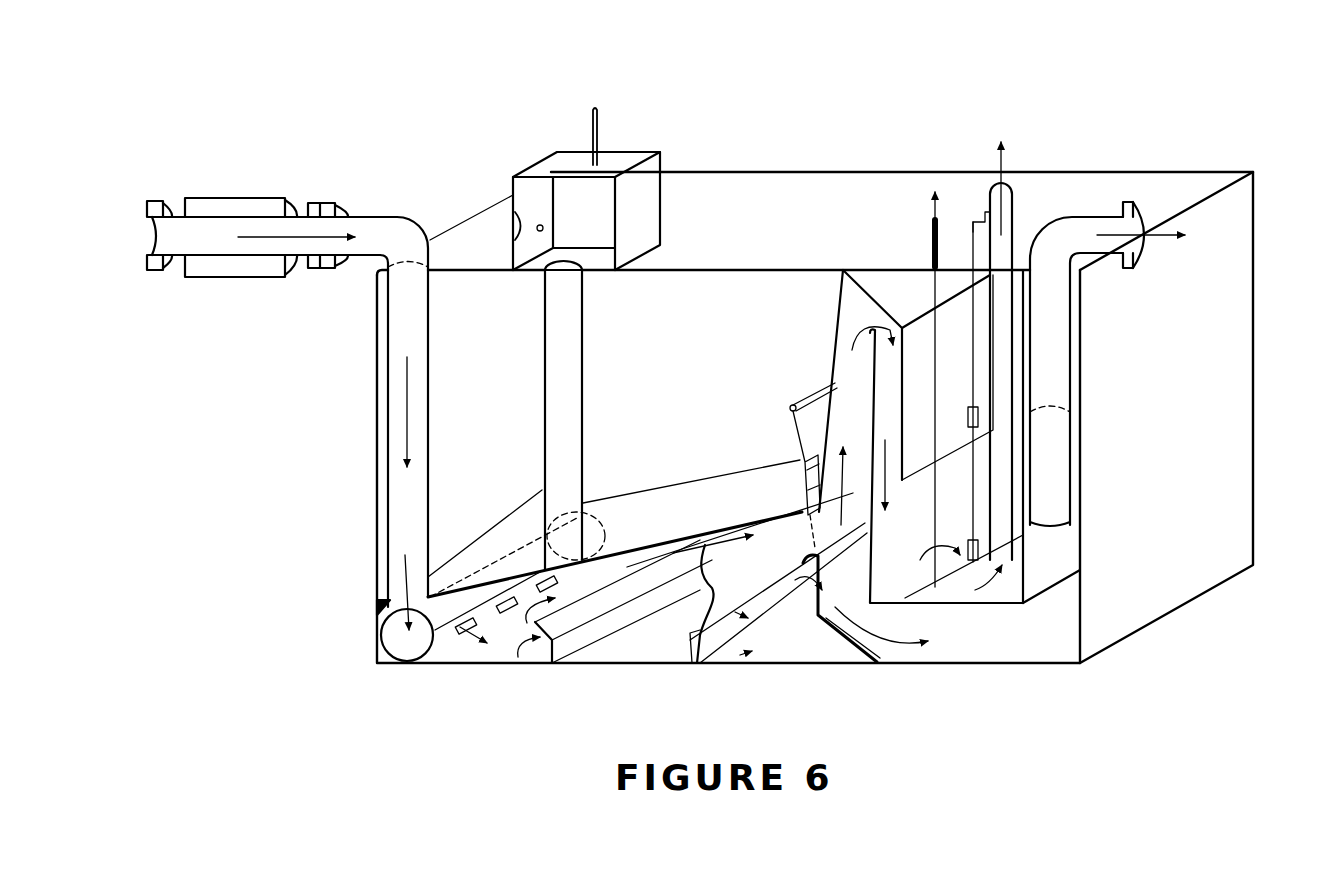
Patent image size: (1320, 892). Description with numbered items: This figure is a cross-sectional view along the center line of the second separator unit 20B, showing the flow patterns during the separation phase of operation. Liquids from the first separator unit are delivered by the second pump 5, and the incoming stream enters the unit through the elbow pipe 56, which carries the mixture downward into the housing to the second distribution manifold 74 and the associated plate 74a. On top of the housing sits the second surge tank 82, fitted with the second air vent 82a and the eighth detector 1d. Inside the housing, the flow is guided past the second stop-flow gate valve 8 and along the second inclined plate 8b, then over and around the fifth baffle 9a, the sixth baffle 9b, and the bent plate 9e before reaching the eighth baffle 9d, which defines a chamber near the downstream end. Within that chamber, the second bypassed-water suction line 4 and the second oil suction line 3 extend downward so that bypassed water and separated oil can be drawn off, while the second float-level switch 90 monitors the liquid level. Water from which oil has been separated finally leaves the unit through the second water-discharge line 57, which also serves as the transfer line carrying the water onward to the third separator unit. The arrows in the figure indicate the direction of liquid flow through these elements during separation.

The second separator unit 20B is at (813, 108).
The second pump 5 is at (218, 198).
The inlet downcomer elbow 56 is at (360, 215).
The second surge tank 82 is at (655, 172).
The second air vent 82a is at (600, 132).
The eighth detector 1d is at (537, 228).
The second stop-flow gate valve 8 is at (778, 414).
The second inclined plate 8b is at (700, 545).
The fifth baffle 9a is at (565, 648).
The sixth baffle 9b is at (762, 635).
The eighth baffle 9d is at (960, 595).
The bent plate 9e is at (880, 662).
The second oil suction line 3 is at (1012, 207).
The second bypassed-water suction line 4 is at (930, 233).
The second float-level switch 90 is at (985, 218).
The second water-discharge line 57 is at (1075, 215).
The second distribution manifold 74 is at (425, 635).
The perforated plate 74a is at (503, 605).